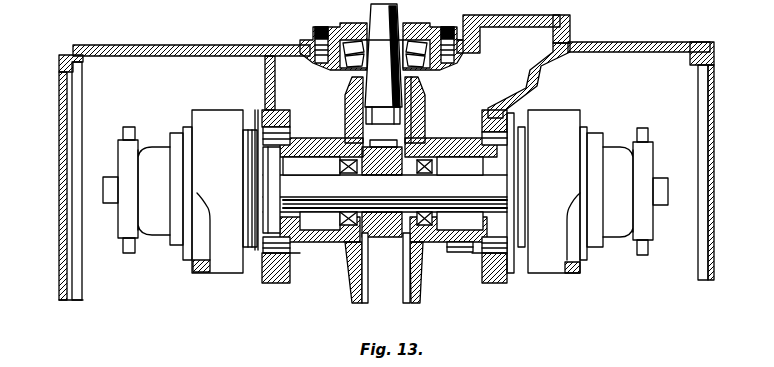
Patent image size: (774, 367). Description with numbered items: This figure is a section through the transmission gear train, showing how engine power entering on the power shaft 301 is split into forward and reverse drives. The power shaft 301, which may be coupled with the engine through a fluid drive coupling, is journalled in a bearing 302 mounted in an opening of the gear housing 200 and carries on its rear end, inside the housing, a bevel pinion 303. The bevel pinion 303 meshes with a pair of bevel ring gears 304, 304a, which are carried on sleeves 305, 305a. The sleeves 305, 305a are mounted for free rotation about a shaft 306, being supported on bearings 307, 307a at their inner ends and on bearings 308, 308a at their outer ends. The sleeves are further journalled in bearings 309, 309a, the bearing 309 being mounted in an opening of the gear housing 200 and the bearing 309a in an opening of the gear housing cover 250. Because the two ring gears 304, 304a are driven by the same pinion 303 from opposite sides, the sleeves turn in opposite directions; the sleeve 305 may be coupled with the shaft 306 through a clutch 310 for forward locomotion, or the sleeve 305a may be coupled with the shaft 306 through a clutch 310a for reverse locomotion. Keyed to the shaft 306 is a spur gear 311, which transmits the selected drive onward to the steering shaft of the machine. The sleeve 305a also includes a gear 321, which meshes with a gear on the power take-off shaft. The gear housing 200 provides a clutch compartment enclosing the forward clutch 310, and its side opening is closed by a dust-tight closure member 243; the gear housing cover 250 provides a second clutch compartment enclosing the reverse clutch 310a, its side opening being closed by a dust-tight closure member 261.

The gear housing 200 is at (245, 45).
The dust-tight closure member 243 is at (60, 213).
The gear housing cover 250 is at (606, 42).
The dust-tight closure member 261 is at (714, 161).
The power shaft 301 is at (396, 7).
The bearing 302 is at (434, 71).
The bevel pinion 303 is at (362, 79).
The bevel ring gear 304 is at (352, 96).
The bevel ring gear 304a is at (423, 98).
The sleeve 305 is at (291, 258).
The sleeve 305a is at (432, 254).
The shaft 306 is at (307, 183).
The bearing 307 is at (312, 238).
The bearing 307a is at (420, 219).
The bearing 308 is at (266, 258).
The bearing 308a is at (503, 255).
The bearing 309 is at (282, 114).
The bearing 309a is at (488, 112).
The clutch 310 is at (205, 268).
The clutch 310a is at (576, 268).
The spur gear 311 is at (368, 228).
The gear 321 is at (455, 252).